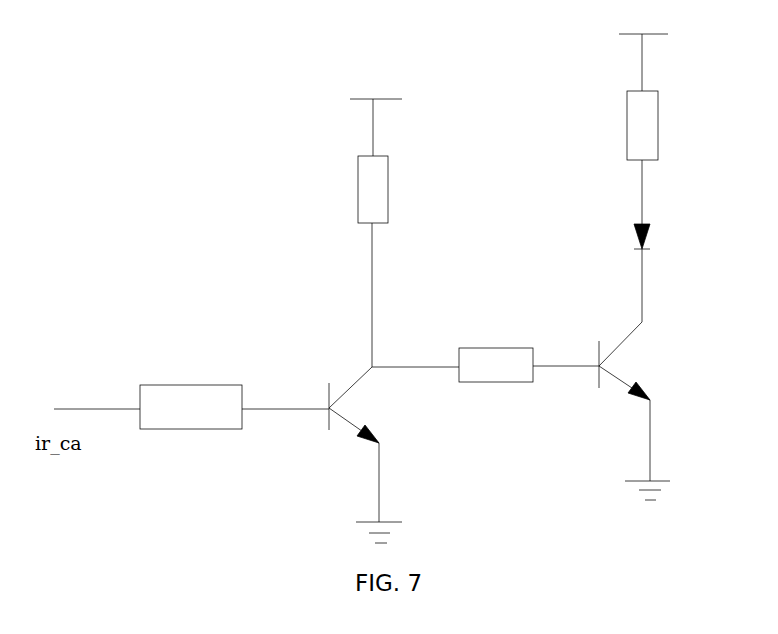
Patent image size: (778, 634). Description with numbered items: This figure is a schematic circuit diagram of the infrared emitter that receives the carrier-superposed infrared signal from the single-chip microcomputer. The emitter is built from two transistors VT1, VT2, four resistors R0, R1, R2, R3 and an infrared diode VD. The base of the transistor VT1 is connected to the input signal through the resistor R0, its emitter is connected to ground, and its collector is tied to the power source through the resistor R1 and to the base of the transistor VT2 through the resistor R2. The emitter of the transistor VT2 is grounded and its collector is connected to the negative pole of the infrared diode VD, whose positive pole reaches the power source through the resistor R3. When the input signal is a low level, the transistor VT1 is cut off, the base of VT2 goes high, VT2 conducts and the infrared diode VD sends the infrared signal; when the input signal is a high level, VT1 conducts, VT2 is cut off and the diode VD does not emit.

The resistor R0 is at (191, 408).
The resistor R1 is at (376, 161).
The resistor R2 is at (496, 365).
The resistor R3 is at (643, 97).
The infrared diode VD is at (615, 241).
The transistor VT1 is at (339, 372).
The transistor VT2 is at (608, 401).